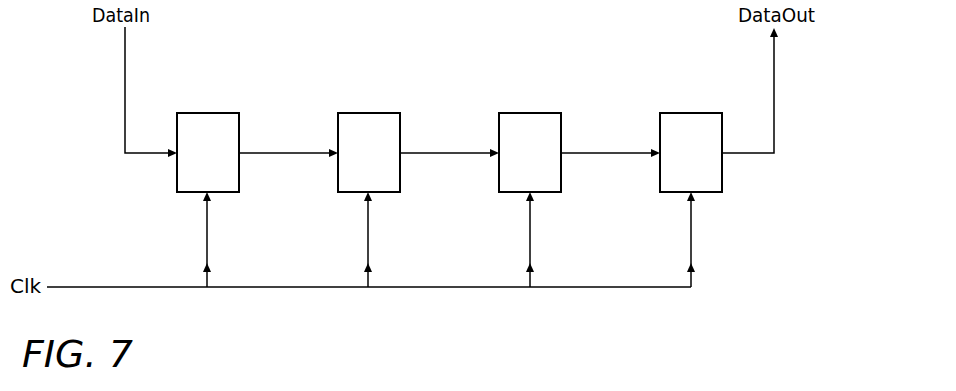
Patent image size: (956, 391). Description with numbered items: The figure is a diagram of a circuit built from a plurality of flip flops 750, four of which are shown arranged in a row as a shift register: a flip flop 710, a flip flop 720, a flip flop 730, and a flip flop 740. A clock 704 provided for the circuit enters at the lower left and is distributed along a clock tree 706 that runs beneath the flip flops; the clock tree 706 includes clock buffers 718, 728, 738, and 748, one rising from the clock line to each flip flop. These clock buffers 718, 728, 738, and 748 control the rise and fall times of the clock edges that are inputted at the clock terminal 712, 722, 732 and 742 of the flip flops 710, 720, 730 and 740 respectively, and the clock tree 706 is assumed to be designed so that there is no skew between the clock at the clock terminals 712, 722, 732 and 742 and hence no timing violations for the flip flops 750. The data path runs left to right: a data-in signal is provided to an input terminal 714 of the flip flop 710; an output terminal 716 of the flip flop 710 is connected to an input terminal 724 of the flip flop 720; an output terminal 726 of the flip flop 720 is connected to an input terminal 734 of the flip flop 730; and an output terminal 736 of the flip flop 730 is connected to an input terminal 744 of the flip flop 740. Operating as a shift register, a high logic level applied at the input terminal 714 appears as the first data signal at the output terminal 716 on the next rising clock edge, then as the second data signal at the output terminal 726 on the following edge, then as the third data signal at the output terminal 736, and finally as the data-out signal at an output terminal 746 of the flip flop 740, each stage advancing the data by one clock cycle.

The clock 704 is at (49, 287).
The clock tree 706 is at (658, 288).
The flip flop 710 is at (211, 112).
The clock terminal 712 is at (206, 200).
The input terminal 714 is at (177, 161).
The output terminal 716 is at (240, 152).
The clock buffer 718 is at (208, 275).
The flip flop 720 is at (372, 112).
The clock terminal 722 is at (367, 200).
The input terminal 724 is at (334, 151).
The output terminal 726 is at (401, 152).
The clock buffer 728 is at (369, 275).
The flip flop 730 is at (533, 112).
The clock terminal 732 is at (529, 200).
The input terminal 734 is at (496, 151).
The output terminal 736 is at (563, 152).
The clock buffer 738 is at (531, 275).
The flip flop 740 is at (694, 112).
The clock terminal 742 is at (690, 200).
The input terminal 744 is at (657, 151).
The output terminal 746 is at (724, 158).
The clock buffer 748 is at (692, 275).
The flip flops 750 is at (231, 113).